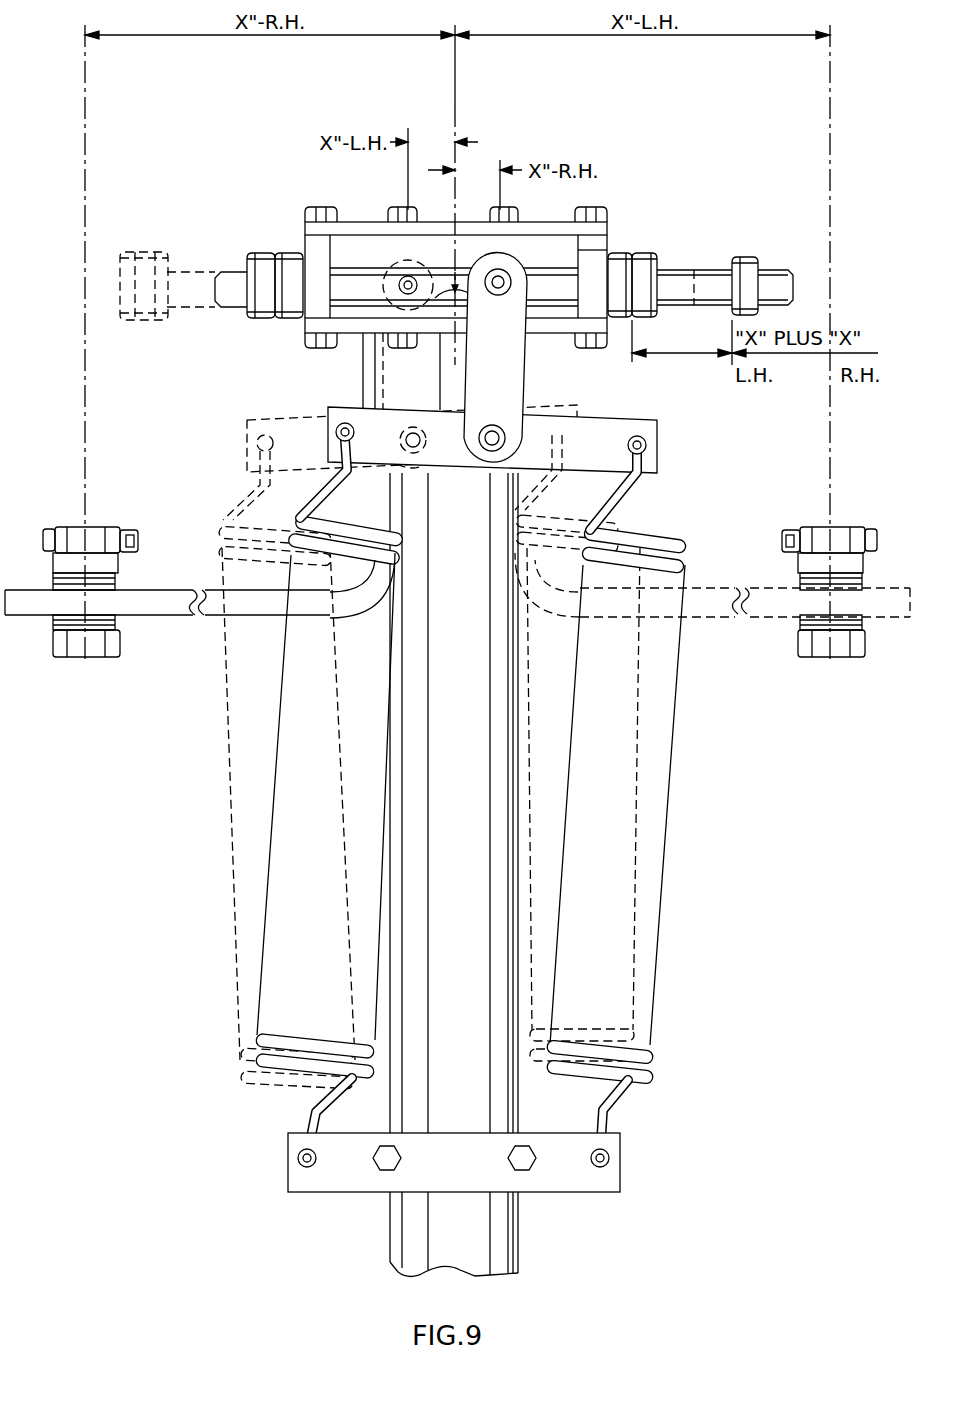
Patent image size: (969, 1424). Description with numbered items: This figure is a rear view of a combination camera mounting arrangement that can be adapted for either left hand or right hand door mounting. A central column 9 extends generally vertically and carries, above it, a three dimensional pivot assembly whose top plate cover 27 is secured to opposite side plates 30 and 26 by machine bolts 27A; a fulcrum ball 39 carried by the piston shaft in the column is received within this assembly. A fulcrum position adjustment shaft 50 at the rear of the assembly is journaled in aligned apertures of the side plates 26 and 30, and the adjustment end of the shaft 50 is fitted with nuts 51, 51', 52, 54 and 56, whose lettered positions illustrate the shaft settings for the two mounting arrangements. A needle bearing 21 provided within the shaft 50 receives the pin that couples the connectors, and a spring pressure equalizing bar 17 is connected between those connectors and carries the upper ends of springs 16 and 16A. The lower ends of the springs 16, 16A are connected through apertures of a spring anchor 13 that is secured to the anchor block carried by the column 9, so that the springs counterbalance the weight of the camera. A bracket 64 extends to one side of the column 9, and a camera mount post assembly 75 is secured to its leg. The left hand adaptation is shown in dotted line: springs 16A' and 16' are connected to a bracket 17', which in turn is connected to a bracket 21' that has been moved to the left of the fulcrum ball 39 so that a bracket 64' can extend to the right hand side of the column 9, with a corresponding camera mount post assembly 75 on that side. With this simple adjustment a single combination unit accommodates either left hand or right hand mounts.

The column 9 is at (520, 1245).
The spring anchor 13 is at (620, 1170).
The spring 16 is at (648, 801).
The spring 16A is at (270, 795).
The spring 16A' is at (247, 770).
The spring 16' is at (635, 748).
The spring pressure equalizing bar 17 is at (523, 440).
The bracket 17' is at (379, 438).
The needle bearing 21 is at (521, 358).
The bracket 21' is at (365, 400).
The side plate 26 is at (318, 248).
The top plate cover 27 is at (543, 222).
The machine bolts 27A is at (593, 252).
The side plate 30 is at (603, 248).
The fulcrum ball 39 is at (472, 234).
The adjustment shaft 50 is at (705, 270).
The adjusting nut 51 is at (760, 261).
The adjusting nut 51' is at (670, 262).
The lock nut 52 is at (617, 320).
The nut 54 is at (290, 252).
The nut 56 is at (260, 252).
The bracket 64 is at (200, 575).
The bracket 64' is at (745, 574).
The camera mount post assembly 75 is at (67, 525).